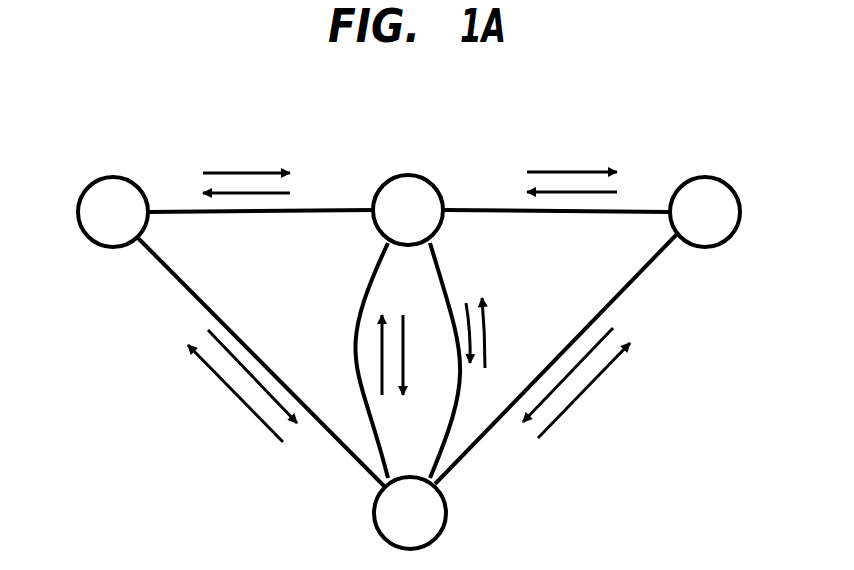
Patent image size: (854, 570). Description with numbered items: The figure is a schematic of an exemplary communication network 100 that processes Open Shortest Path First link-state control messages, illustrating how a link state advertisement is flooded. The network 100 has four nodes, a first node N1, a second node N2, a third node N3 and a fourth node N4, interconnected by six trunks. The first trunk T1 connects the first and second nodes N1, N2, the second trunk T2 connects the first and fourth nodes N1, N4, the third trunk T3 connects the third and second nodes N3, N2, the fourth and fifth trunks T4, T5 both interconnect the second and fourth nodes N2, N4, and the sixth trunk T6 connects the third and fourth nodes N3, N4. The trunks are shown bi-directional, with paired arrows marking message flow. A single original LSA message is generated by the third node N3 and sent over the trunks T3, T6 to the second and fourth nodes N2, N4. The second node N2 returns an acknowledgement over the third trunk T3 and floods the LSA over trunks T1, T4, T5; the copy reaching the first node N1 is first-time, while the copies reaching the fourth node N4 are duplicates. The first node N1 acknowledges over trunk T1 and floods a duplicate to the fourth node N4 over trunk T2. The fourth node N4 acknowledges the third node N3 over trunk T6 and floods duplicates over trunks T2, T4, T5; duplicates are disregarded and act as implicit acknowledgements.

The communication network 100 is at (428, 140).
The first node N1 is at (113, 212).
The second node N2 is at (408, 210).
The third node N3 is at (705, 212).
The fourth node N4 is at (410, 513).
The first trunk T1 is at (260, 214).
The second trunk T2 is at (261, 362).
The third trunk T3 is at (556, 214).
The fourth trunk T4 is at (374, 360).
The fifth trunk T5 is at (466, 360).
The sixth trunk T6 is at (556, 358).